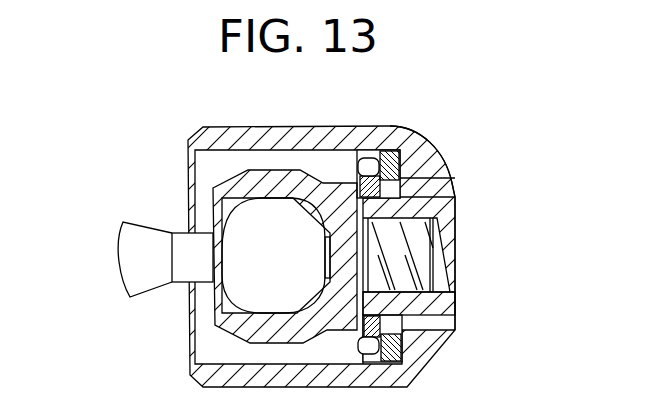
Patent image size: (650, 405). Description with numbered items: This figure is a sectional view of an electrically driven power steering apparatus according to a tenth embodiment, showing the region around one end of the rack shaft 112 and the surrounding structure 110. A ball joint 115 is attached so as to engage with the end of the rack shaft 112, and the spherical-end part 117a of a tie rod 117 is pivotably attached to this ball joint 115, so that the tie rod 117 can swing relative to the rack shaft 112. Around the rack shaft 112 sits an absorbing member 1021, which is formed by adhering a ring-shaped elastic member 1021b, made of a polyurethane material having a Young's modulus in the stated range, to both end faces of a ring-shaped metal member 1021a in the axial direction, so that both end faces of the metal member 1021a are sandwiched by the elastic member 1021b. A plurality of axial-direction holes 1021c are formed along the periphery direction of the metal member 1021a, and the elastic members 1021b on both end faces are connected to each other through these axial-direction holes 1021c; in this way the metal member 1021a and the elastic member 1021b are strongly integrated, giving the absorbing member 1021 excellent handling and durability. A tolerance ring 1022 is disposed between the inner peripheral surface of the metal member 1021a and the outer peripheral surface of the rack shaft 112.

The housing 110 is at (229, 128).
The rack shaft 112 is at (440, 186).
The ball joint 115 is at (212, 177).
The tie rod 117 is at (140, 253).
The spherical-end part 117a is at (252, 290).
The absorbing member 1021 is at (395, 148).
The metal member 1021a is at (430, 178).
The elastic member 1021b is at (420, 168).
The axial-direction holes 1021c is at (362, 160).
The tolerance ring 1022 is at (438, 300).